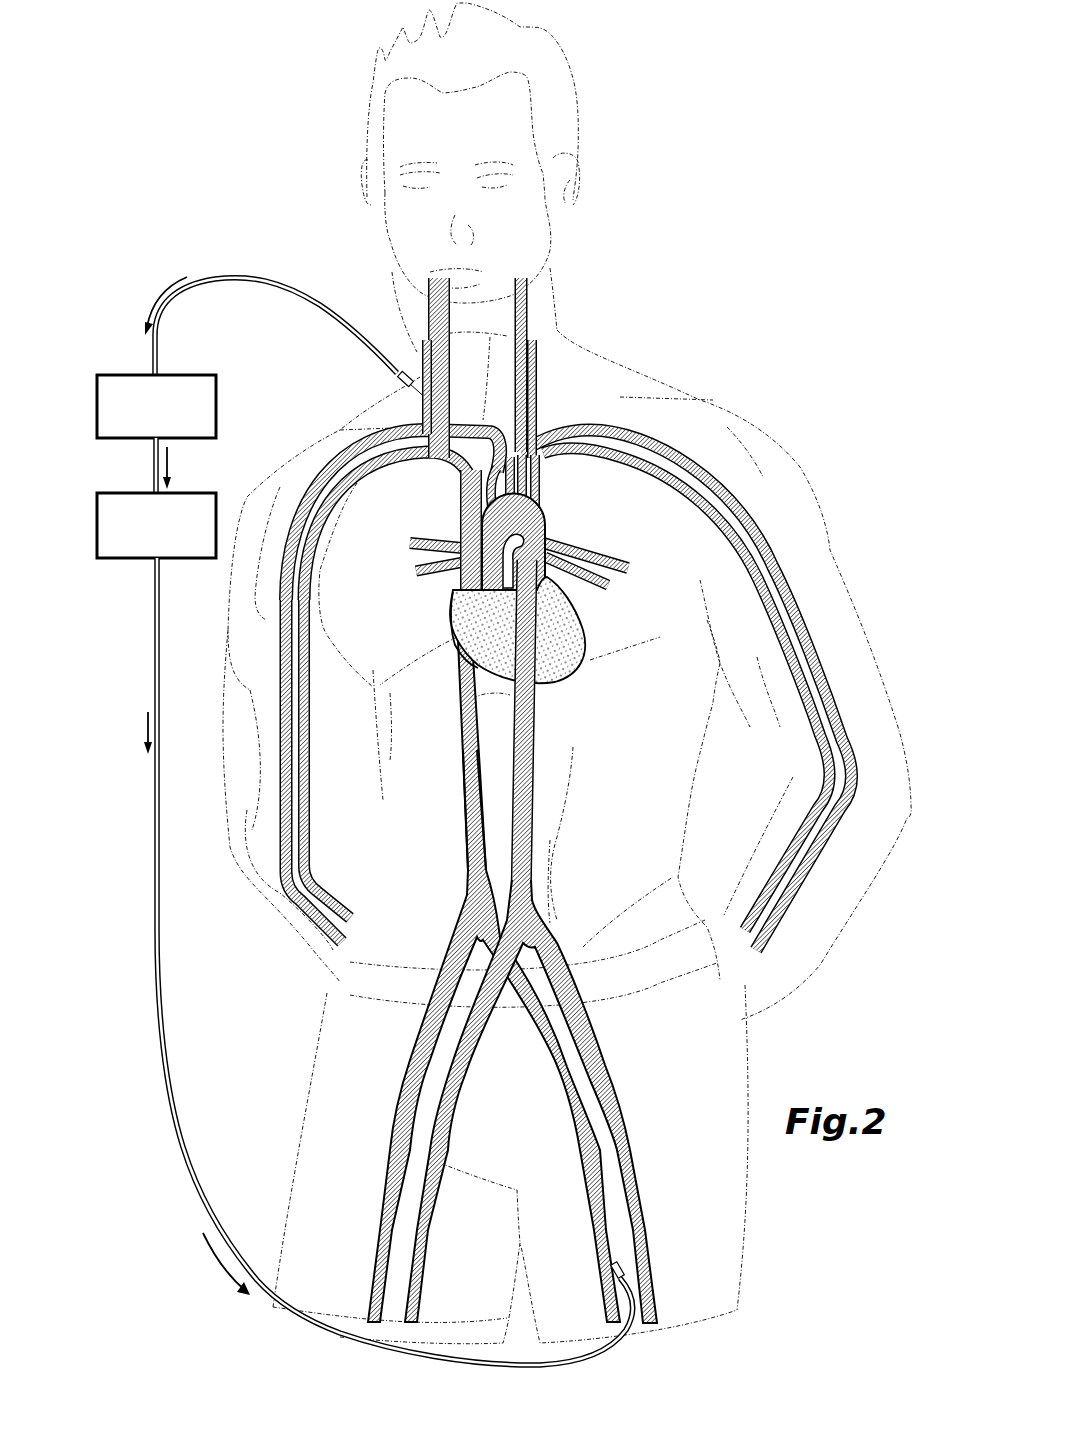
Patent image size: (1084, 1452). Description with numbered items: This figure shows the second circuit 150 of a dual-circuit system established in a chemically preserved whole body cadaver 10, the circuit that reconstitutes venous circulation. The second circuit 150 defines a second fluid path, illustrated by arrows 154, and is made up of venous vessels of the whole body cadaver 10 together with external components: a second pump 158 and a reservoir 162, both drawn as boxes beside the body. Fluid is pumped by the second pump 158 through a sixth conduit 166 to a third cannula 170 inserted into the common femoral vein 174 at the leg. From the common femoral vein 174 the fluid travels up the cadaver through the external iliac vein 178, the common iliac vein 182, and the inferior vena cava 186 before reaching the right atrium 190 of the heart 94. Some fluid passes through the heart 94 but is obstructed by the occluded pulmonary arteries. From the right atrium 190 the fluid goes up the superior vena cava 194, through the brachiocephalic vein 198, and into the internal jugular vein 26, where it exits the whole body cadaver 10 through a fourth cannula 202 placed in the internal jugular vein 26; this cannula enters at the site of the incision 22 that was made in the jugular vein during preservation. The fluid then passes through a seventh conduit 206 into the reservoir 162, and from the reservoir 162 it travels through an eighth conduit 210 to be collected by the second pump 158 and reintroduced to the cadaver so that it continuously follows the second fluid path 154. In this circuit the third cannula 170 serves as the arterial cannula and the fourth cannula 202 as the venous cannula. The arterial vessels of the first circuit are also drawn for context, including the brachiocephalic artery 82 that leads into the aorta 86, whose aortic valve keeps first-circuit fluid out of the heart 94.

The whole body cadaver 10 is at (653, 348).
The incision 22 is at (426, 402).
The internal jugular vein 26 is at (431, 378).
The brachiocephalic artery 82 is at (497, 488).
The aorta 86 is at (546, 518).
The heart 94 is at (583, 630).
The second circuit 150 is at (360, 772).
The second fluid path 154 is at (148, 286).
The second pump 158 is at (127, 560).
The reservoir 162 is at (217, 410).
The sixth conduit 166 is at (186, 1190).
The third cannula 170 is at (626, 1268).
The common femoral vein 174 is at (583, 1152).
The external iliac vein 178 is at (552, 1043).
The common iliac vein 182 is at (462, 828).
The inferior vena cava 186 is at (460, 667).
The right atrium 190 is at (455, 596).
The superior vena cava 194 is at (468, 510).
The brachiocephalic vein 198 is at (453, 465).
The fourth cannula 202 is at (396, 378).
The seventh conduit 206 is at (287, 281).
The eighth conduit 210 is at (155, 465).